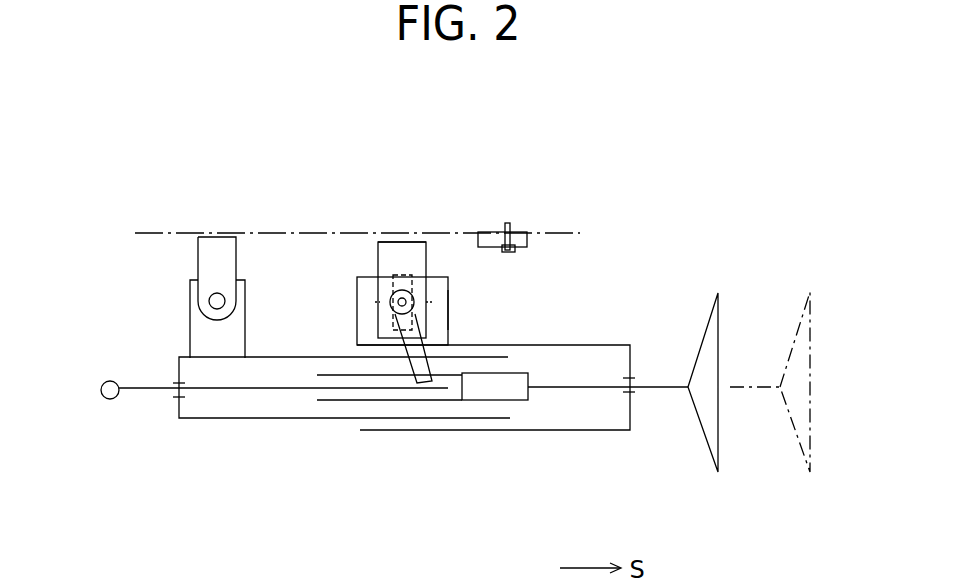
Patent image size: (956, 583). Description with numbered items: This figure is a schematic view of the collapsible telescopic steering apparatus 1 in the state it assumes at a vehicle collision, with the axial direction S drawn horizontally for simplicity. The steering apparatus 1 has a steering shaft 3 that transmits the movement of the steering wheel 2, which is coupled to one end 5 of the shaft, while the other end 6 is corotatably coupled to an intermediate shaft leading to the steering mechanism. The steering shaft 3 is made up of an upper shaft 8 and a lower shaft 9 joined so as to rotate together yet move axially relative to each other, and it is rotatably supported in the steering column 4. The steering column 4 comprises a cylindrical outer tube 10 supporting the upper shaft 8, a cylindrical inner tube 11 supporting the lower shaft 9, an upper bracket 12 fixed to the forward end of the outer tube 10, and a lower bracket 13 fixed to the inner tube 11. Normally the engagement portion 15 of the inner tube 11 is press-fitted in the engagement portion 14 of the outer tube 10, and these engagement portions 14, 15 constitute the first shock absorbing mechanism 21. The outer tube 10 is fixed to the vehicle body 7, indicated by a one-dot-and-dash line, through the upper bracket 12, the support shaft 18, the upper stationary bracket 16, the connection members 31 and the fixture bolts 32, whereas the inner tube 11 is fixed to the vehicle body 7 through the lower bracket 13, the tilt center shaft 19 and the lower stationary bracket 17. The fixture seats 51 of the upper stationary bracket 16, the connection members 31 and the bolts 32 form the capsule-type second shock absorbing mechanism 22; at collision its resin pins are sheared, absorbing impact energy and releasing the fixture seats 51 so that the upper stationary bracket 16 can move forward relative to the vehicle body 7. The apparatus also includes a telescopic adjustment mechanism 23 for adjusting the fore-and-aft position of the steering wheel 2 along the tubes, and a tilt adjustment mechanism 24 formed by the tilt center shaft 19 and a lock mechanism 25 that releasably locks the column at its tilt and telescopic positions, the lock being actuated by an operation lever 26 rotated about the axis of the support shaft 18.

The steering apparatus 1 is at (611, 296).
The steering wheel 2 is at (707, 443).
The steering shaft 3 is at (353, 471).
The steering column 4 is at (202, 424).
The one end of the steering shaft 5 is at (658, 387).
The other end of the steering shaft 6 is at (108, 400).
The vehicle body 7 is at (565, 232).
The upper shaft 8 is at (353, 402).
The lower shaft 9 is at (270, 392).
The outer tube 10 is at (587, 430).
The inner tube 11 is at (253, 420).
The upper bracket 12 is at (440, 283).
The lower bracket 13 is at (200, 337).
The engagement portion of the outer tube 14 is at (463, 430).
The engagement portion of the inner tube 15 is at (388, 430).
The upper stationary bracket 16 is at (393, 250).
The lower stationary bracket 17 is at (207, 258).
The support shaft 18 is at (393, 278).
The tilt center shaft 19 is at (217, 301).
The first shock absorbing mechanism 21 is at (472, 509).
The second shock absorbing mechanism 22 is at (558, 153).
The telescopic adjustment mechanism 23 is at (452, 310).
The tilt adjustment mechanism 24 is at (208, 153).
The lock mechanism 25 is at (384, 302).
The operation lever 26 is at (428, 372).
The connection member 31 is at (478, 233).
The fixture bolt 32 is at (507, 225).
The fixture seat 51 is at (400, 240).